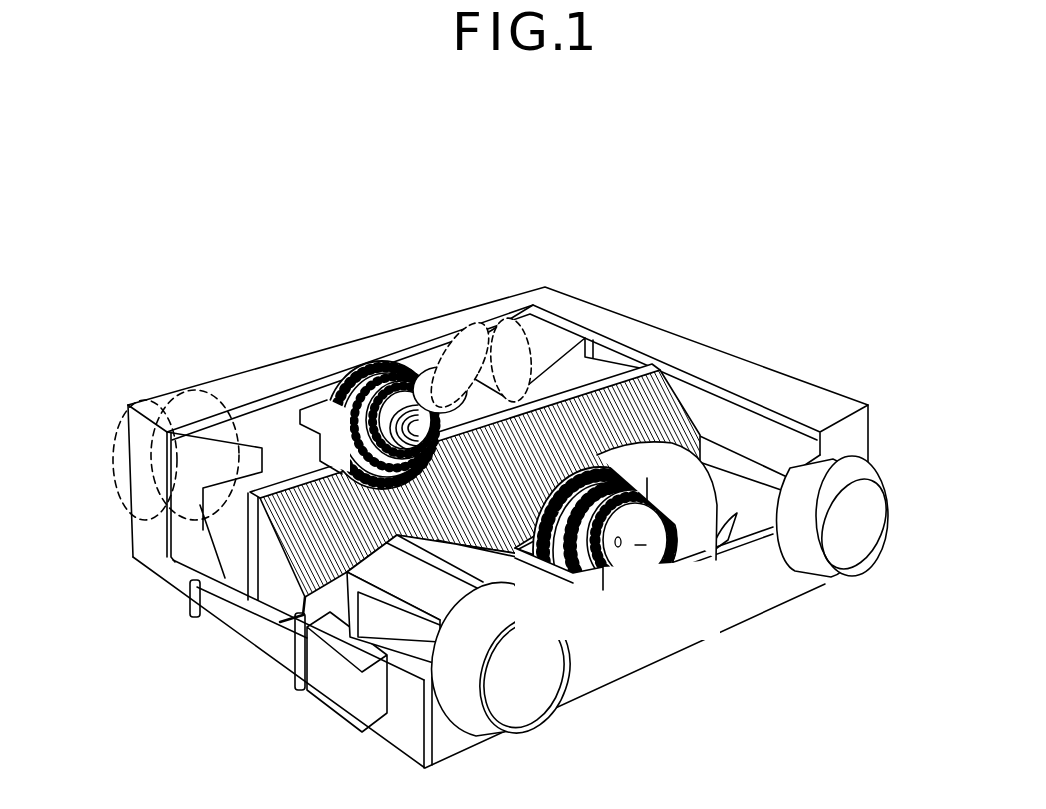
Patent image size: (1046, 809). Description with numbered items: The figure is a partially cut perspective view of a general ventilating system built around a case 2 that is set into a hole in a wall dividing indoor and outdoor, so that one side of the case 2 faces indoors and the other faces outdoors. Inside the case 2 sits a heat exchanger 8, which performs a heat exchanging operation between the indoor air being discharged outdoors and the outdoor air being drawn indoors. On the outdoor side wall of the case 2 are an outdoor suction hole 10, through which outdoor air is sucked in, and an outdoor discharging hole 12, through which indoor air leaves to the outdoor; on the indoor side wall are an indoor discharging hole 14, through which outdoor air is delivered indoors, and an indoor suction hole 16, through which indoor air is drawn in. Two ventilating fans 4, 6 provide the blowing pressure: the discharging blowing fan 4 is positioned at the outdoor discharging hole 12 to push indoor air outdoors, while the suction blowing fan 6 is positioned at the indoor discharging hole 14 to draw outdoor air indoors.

The case 2 is at (807, 398).
The discharging blowing fan 4 is at (347, 393).
The suction blowing fan 6 is at (677, 572).
The heat exchanger 8 is at (657, 400).
The outdoor suction hole 10 is at (115, 450).
The outdoor discharging hole 12 is at (427, 330).
The indoor discharging hole 14 is at (577, 649).
The indoor suction hole 16 is at (866, 503).